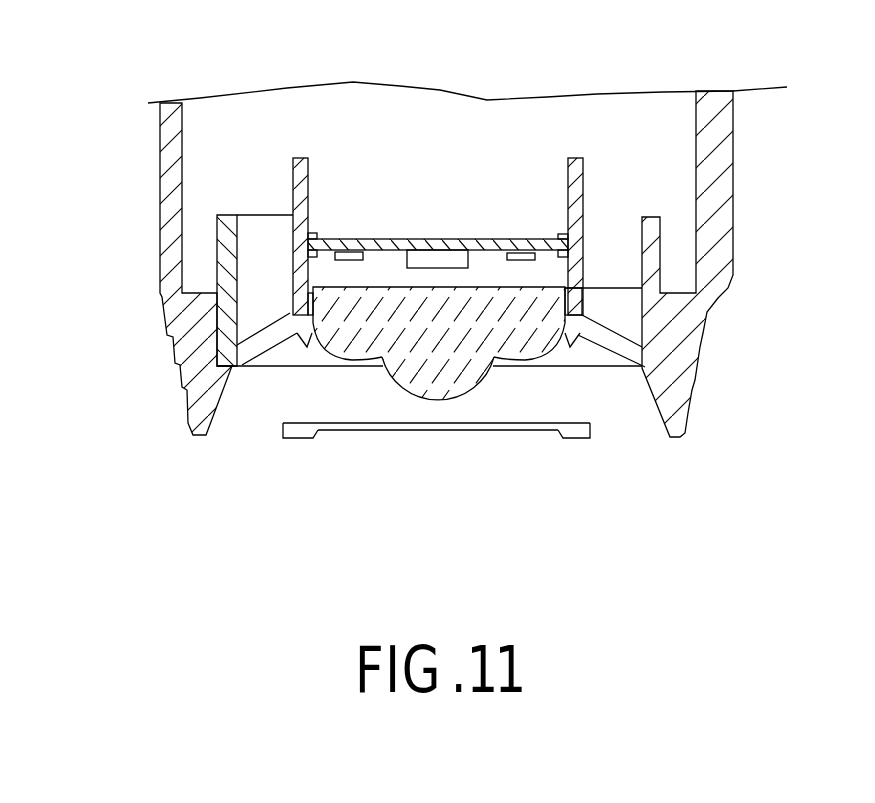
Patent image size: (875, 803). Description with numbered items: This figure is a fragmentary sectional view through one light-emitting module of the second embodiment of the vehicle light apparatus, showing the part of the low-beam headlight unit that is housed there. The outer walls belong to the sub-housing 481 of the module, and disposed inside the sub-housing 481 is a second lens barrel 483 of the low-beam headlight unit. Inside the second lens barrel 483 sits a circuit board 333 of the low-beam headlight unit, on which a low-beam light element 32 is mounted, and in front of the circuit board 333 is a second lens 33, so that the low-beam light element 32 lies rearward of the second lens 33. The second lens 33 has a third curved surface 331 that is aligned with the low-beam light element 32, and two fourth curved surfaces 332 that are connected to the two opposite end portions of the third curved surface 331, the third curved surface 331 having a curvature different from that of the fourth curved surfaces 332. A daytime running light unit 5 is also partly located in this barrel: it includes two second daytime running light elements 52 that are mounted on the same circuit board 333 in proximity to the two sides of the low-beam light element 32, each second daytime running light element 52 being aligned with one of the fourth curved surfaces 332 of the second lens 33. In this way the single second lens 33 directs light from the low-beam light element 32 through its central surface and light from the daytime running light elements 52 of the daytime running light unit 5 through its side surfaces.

The sub-housing 481 is at (718, 233).
The second lens barrel 483 is at (246, 200).
The daytime running light unit 5 is at (521, 276).
The circuit board 333 is at (438, 138).
The low-beam light element 32 is at (421, 135).
The second daytime running light element 52 is at (522, 257).
The second lens 33 is at (487, 407).
The third curved surface 331 is at (433, 403).
The fourth curved surface 332 is at (345, 360).